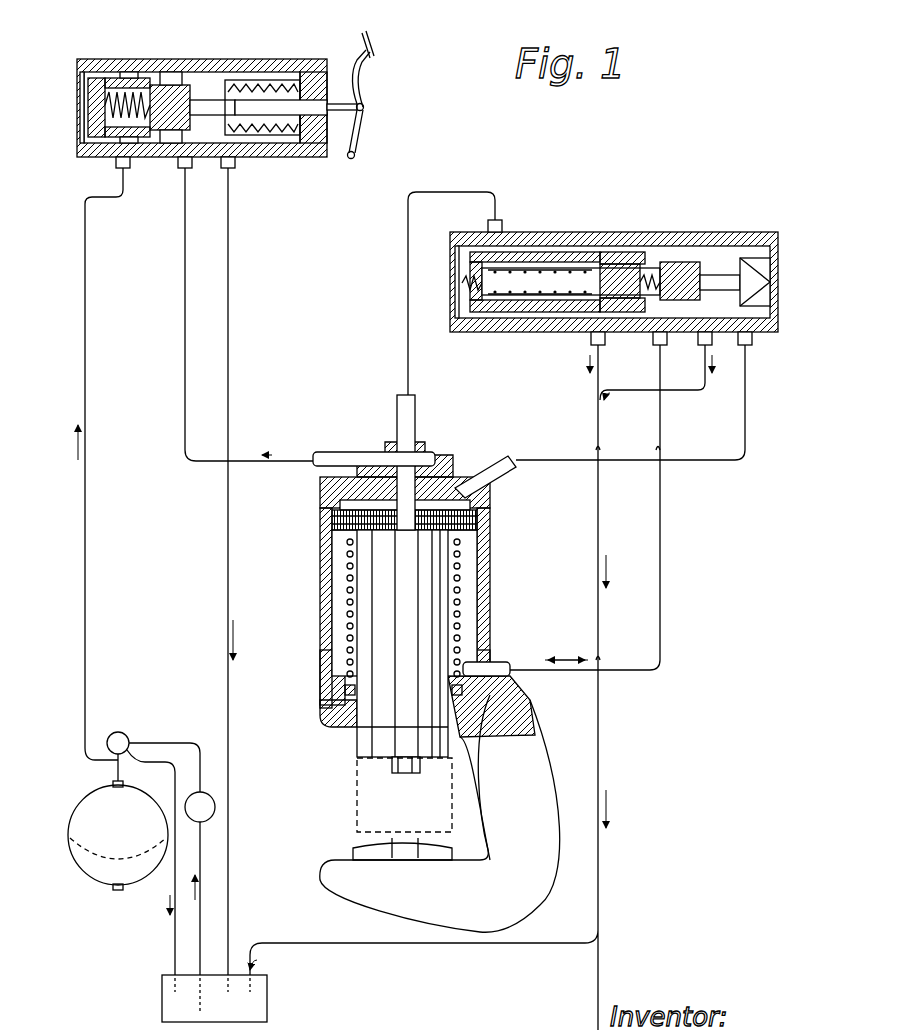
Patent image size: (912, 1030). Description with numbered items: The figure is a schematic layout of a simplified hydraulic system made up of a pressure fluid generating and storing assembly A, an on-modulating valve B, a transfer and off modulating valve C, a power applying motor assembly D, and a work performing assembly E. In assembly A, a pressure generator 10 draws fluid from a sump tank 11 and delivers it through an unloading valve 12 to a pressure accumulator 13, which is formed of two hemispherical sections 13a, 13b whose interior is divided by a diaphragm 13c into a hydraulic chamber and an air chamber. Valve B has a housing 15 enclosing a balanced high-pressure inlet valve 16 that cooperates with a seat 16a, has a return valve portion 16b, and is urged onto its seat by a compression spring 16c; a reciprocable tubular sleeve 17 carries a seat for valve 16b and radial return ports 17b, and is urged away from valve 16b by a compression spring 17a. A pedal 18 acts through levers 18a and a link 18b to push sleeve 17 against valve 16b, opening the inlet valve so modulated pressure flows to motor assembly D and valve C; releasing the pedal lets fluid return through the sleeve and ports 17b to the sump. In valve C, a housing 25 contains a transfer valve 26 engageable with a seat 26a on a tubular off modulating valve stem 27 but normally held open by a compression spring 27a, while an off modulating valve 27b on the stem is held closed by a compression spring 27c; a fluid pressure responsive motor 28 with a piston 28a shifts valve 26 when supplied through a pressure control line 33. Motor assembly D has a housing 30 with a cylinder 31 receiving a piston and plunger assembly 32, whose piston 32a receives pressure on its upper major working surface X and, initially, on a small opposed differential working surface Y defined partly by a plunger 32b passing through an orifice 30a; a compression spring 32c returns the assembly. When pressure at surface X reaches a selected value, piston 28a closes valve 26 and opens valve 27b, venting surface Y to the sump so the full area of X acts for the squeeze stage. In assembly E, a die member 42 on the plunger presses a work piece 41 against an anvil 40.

The pressure generator 10 is at (204, 792).
The sump tank 11 is at (266, 992).
The unloading valve 12 is at (122, 732).
The pressure accumulator 13 is at (70, 832).
The hemispherical section 13a is at (92, 798).
The hemispherical section 13b is at (96, 876).
The diaphragm 13c is at (80, 856).
The housing 15 is at (104, 60).
The high-pressure inlet valve 16 is at (90, 90).
The valve seat 16a is at (158, 80).
The relief or return valve portion 16b is at (182, 150).
The compression spring 16c is at (110, 106).
The reciprocable tubular sleeve 17 is at (285, 78).
The compression spring 17a is at (262, 88).
The radial low pressure return ports 17b is at (246, 128).
The pedal 18 is at (372, 40).
The levers 18a is at (366, 84).
The link 18b is at (345, 156).
The housing 25 is at (770, 240).
The transfer valve 26 is at (680, 300).
The seat 26a is at (672, 262).
The tubular off modulating valve stem 27 is at (555, 256).
The compression spring 27a is at (464, 283).
The off modulating valve 27b is at (598, 262).
The compression spring 27c is at (494, 300).
The fluid pressure responsive motor 28 is at (748, 256).
The piston 28a is at (770, 282).
The housing 30 is at (490, 550).
The orifice 30a is at (365, 728).
The cylinder 31 is at (488, 577).
The piston and plunger assembly 32 is at (466, 596).
The piston 32a is at (478, 518).
The plunger 32b is at (370, 594).
The compression spring 32c is at (350, 618).
The pressure control line 33 is at (634, 462).
The anvil 40 is at (395, 860).
The work piece 41 is at (368, 846).
The die member 42 is at (408, 773).
The hydraulic pressure fluid generating and storing assembly A is at (140, 893).
The on-modulating valve B is at (205, 57).
The transfer and off modulating valve C is at (627, 232).
The hydraulic pressure fluid power applying motor assembly D is at (495, 624).
The work performing assembly E is at (355, 790).
The upper major working surface X is at (345, 500).
The differential working surface Y is at (352, 533).